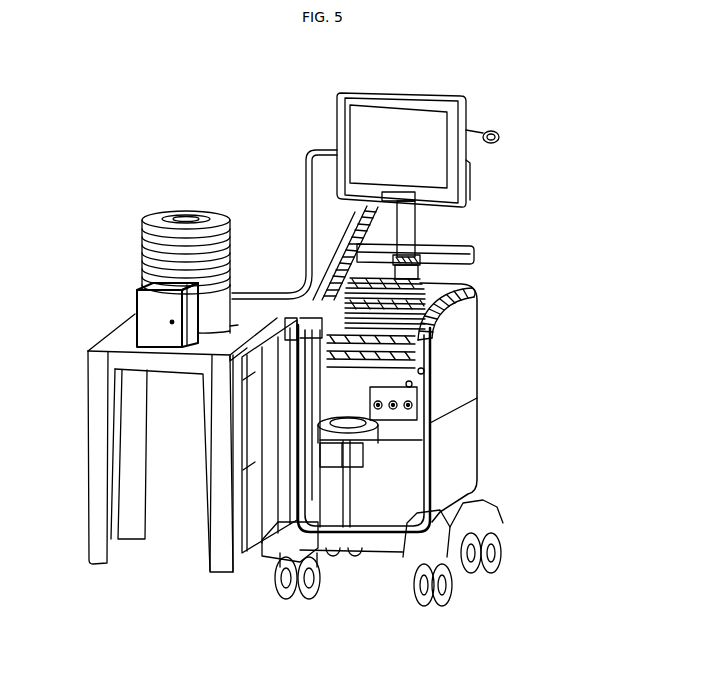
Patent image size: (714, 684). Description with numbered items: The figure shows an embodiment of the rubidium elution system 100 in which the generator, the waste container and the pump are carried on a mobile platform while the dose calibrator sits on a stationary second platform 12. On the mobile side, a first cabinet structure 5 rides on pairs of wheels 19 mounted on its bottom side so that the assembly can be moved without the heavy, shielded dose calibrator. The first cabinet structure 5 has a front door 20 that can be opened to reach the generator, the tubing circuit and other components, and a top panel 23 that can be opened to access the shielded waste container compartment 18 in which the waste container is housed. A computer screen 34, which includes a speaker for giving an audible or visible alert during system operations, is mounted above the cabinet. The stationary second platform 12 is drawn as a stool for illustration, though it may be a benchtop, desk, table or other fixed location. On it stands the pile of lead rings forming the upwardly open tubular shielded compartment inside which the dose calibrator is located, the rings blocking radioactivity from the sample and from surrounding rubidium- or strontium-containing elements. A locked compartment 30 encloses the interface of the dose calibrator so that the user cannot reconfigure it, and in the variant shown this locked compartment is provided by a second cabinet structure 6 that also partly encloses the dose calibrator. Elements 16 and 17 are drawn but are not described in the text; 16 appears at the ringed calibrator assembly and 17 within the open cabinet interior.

The rubidium elution system 100 is at (198, 136).
The computer screen 34 is at (406, 154).
The top panel 23 is at (348, 255).
The canister 16 is at (157, 257).
The second cabinet structure 6 is at (217, 287).
The locked compartment 30 is at (150, 310).
The stationary second platform 12 is at (102, 392).
The waste container compartment 18 is at (457, 287).
The first cabinet structure 5 is at (454, 367).
The front door 20 is at (250, 492).
The pump 17 is at (350, 449).
The wheels 19 is at (500, 550).